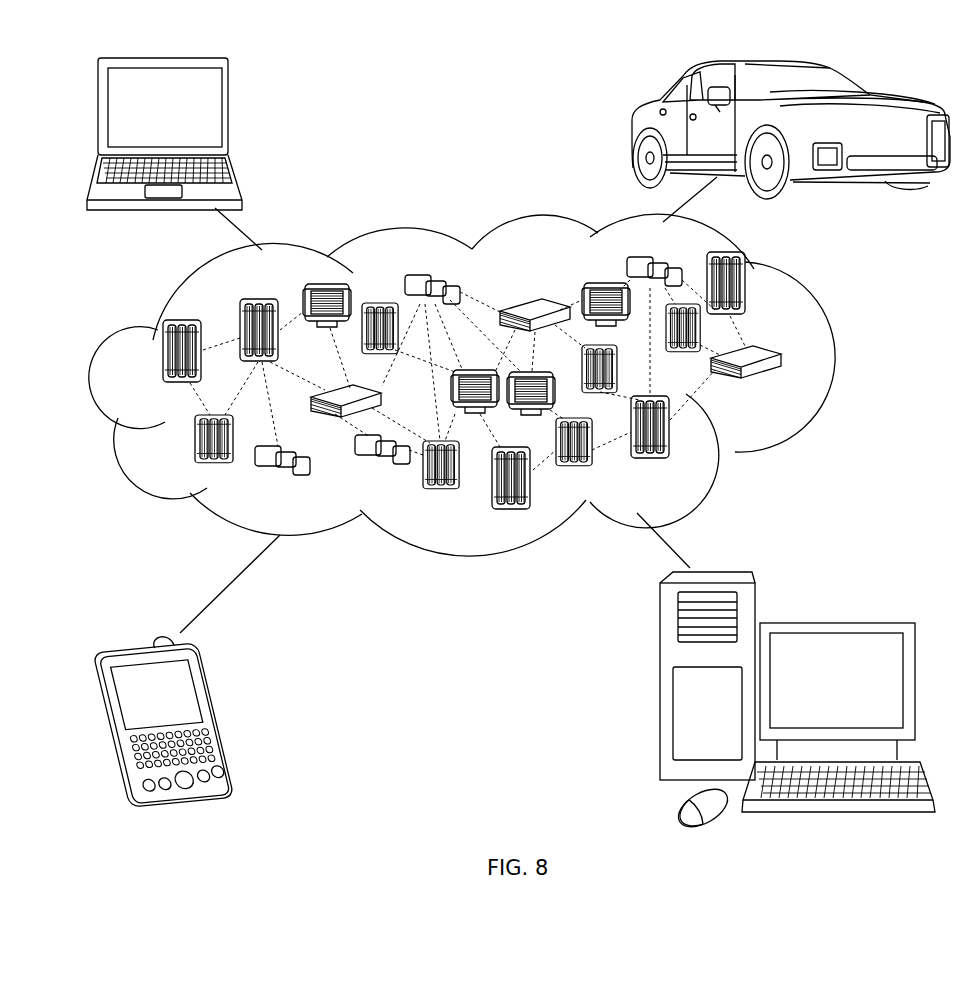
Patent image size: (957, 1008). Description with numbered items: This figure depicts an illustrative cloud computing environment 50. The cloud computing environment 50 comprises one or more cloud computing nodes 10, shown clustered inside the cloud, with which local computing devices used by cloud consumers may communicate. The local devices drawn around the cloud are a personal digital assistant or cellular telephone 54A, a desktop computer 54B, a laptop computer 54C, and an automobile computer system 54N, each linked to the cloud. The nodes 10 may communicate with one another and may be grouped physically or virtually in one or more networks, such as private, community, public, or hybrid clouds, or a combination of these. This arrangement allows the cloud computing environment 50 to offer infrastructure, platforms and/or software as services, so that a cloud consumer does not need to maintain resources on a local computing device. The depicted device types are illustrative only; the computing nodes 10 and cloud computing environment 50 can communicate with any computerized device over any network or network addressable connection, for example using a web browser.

The cloud computing nodes 10 is at (790, 391).
The cloud computing environment 50 is at (837, 360).
The personal digital assistant or cellular telephone 54A is at (221, 707).
The desktop computer 54B is at (832, 622).
The laptop computer 54C is at (229, 113).
The automobile computer system 54N is at (632, 130).